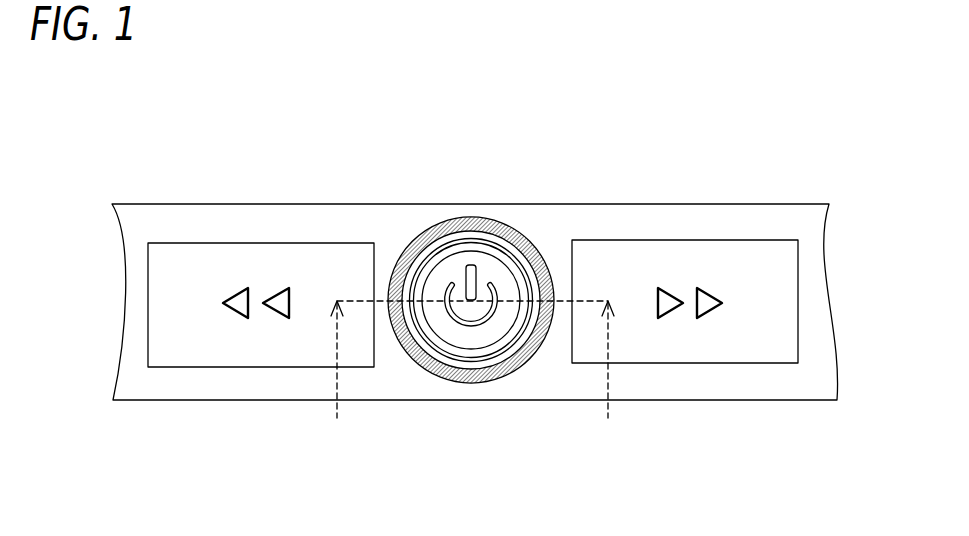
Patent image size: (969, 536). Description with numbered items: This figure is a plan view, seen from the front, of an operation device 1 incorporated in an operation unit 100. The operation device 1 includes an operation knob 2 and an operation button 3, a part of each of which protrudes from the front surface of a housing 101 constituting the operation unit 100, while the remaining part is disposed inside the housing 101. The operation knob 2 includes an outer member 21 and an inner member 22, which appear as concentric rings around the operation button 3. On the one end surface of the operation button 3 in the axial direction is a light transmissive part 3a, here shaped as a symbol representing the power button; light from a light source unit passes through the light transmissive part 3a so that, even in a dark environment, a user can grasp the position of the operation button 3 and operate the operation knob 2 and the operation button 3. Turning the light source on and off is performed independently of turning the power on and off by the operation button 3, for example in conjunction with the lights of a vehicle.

The operation unit 100 is at (809, 185).
The housing 101 is at (685, 213).
The operation device 1 is at (549, 223).
The operation knob 2 is at (408, 229).
The outer member 21 is at (468, 217).
The inner member 22 is at (445, 250).
The operation button 3 is at (488, 258).
The light transmissive part 3a is at (460, 325).